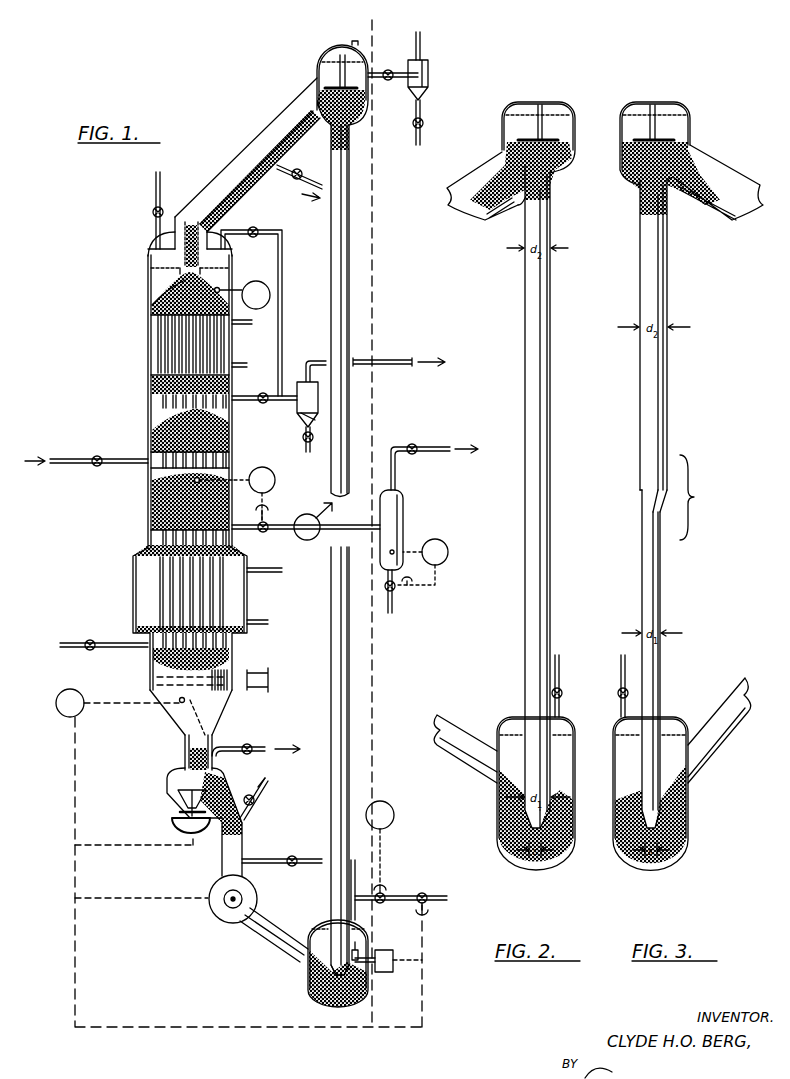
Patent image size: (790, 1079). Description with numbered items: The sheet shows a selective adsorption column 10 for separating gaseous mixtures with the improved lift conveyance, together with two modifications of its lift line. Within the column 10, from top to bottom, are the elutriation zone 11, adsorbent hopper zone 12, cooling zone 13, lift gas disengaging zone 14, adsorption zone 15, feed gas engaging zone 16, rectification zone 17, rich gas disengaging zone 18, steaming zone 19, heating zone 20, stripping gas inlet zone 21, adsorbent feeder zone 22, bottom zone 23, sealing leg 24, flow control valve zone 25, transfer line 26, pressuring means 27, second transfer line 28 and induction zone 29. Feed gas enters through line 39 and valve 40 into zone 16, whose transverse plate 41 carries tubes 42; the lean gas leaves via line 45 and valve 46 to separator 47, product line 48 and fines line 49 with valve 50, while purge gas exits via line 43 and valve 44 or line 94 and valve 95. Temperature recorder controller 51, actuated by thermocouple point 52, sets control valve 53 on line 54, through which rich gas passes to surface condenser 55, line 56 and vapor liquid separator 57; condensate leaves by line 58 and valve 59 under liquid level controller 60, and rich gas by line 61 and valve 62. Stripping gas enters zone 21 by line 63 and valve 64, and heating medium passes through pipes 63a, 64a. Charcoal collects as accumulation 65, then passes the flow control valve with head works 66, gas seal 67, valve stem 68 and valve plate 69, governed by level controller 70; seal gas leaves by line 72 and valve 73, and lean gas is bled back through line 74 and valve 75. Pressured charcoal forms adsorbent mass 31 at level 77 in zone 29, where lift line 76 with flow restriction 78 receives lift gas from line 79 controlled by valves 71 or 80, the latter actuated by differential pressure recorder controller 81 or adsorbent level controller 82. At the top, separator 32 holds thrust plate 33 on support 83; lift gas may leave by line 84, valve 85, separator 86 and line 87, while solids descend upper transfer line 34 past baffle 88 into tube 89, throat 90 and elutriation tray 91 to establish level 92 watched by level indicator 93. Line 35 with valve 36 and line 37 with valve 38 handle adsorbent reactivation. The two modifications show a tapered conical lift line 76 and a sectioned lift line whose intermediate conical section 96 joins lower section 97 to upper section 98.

In FIG. 1, the selective adsorption column 10 is at (177, 492).
In FIG. 1, the elutriation zone 11 is at (235, 250).
In FIG. 1, the adsorbent hopper zone 12 is at (157, 330).
In FIG. 1, the cooling zone 13 is at (196, 352).
In FIG. 1, the lift gas disengaging zone 14 is at (156, 400).
In FIG. 1, the adsorption zone 15 is at (178, 425).
In FIG. 1, the feed gas engaging zone 16 is at (151, 453).
In FIG. 1, the rectification zone 17 is at (170, 505).
In FIG. 1, the rich gas disengaging zone 18 is at (160, 535).
In FIG. 1, the preferential desorption or steaming zone 19 is at (148, 545).
In FIG. 1, the heating zone 20 is at (160, 585).
In FIG. 1, the stripping gas inlet zone 21 is at (152, 658).
In FIG. 1, the adsorbent feeder zone 22 is at (160, 685).
In FIG. 1, the bottom zone 23 is at (230, 700).
In FIG. 1, the sealing leg 24 is at (185, 748).
In FIG. 1, the adsorbent flow control valve zone 25 is at (222, 779).
In FIG. 1, the transfer line 26 is at (245, 831).
In FIG. 1, the pressuring means 27 is at (226, 921).
In FIG. 1, the second transfer line 28 is at (273, 940).
In FIG. 2, the second transfer line 28 is at (460, 728).
In FIG. 3, the second transfer line 28 is at (718, 726).
In FIG. 1, the lift line induction zone 29 is at (337, 967).
In FIG. 2, the lift line induction zone 29 is at (540, 809).
In FIG. 3, the lift line induction zone 29 is at (672, 793).
In FIG. 1, the adsorbent mass 31 is at (366, 985).
In FIG. 2, the adsorbent mass 31 is at (506, 815).
In FIG. 3, the adsorbent mass 31 is at (680, 817).
In FIG. 1, the separator zone 32 is at (316, 86).
In FIG. 2, the separator zone 32 is at (533, 139).
In FIG. 3, the separator zone 32 is at (689, 158).
In FIG. 1, the thrust plate 33 is at (316, 96).
In FIG. 2, the thrust plate 33 is at (530, 150).
In FIG. 1, the upper transfer line 34 is at (250, 156).
In FIG. 2, the upper transfer line 34 is at (470, 206).
In FIG. 3, the upper transfer line 34 is at (716, 206).
In FIG. 1, the line 35 is at (290, 176).
In FIG. 1, the valve 36 is at (298, 169).
In FIG. 1, the line 37 is at (263, 786).
In FIG. 1, the valve 38 is at (256, 801).
In FIG. 1, the line 39 is at (73, 458).
In FIG. 1, the valve 40 is at (96, 466).
In FIG. 1, the transverse plate 41 is at (216, 460).
In FIG. 1, the tubes 42 is at (226, 464).
In FIG. 1, the line 43 is at (253, 227).
In FIG. 1, the valve 44 is at (262, 230).
In FIG. 1, the line 45 is at (250, 392).
In FIG. 1, the valve 46 is at (263, 403).
In FIG. 1, the separator 47 is at (303, 420).
In FIG. 1, the line 48 is at (399, 360).
In FIG. 1, the line 49 is at (316, 426).
In FIG. 1, the valve 50 is at (314, 439).
In FIG. 1, the temperature recorder controller 51 is at (276, 481).
In FIG. 1, the thermocouple point 52 is at (194, 482).
In FIG. 1, the control valve 53 is at (263, 533).
In FIG. 1, the line 54 is at (270, 518).
In FIG. 1, the surface condenser 55 is at (307, 541).
In FIG. 1, the line 56 is at (348, 525).
In FIG. 1, the vapor liquid separator 57 is at (404, 505).
In FIG. 1, the line 58 is at (391, 616).
In FIG. 1, the valve 59 is at (396, 591).
In FIG. 1, the liquid level controller 60 is at (449, 552).
In FIG. 1, the line 61 is at (406, 449).
In FIG. 1, the valve 62 is at (418, 449).
In FIG. 1, the line 63 is at (78, 643).
In FIG. 1, the inlet or outlet pipe 63a is at (266, 573).
In FIG. 1, the valve 64 is at (88, 650).
In FIG. 1, the inlet or outlet pipe 64a is at (269, 622).
In FIG. 1, the accumulation 65 is at (213, 712).
In FIG. 1, the valve head works 66 is at (181, 836).
In FIG. 1, the gas seal 67 is at (180, 812).
In FIG. 1, the valve stem 68 is at (180, 792).
In FIG. 1, the valve plate 69 is at (181, 771).
In FIG. 1, the level controller 70 is at (57, 711).
In FIG. 1, the control valve 71 is at (429, 912).
In FIG. 1, the line 72 is at (222, 746).
In FIG. 1, the valve 73 is at (250, 744).
In FIG. 1, the line 74 is at (291, 866).
In FIG. 1, the valve 75 is at (293, 856).
In FIG. 1, the lift line 76 is at (352, 705).
In FIG. 2, the lift line 76 is at (541, 396).
In FIG. 3, the lift line 76 is at (698, 497).
In FIG. 1, the level 77 is at (338, 925).
In FIG. 1, the flow restriction 78 is at (320, 998).
In FIG. 2, the flow restriction 78 is at (560, 830).
In FIG. 1, the line 79 is at (425, 893).
In FIG. 2, the line 79 is at (580, 668).
In FIG. 3, the line 79 is at (623, 686).
In FIG. 1, the valve 80 is at (383, 893).
In FIG. 2, the valve 80 is at (564, 694).
In FIG. 3, the valve 80 is at (623, 693).
In FIG. 1, the differential pressure recorder controller 81 is at (395, 812).
In FIG. 1, the adsorbent level controller 82 is at (396, 962).
In FIG. 1, the support 83 is at (320, 70).
In FIG. 2, the support 83 is at (531, 100).
In FIG. 3, the support 83 is at (690, 121).
In FIG. 1, the line 84 is at (376, 72).
In FIG. 1, the valve 85 is at (388, 81).
In FIG. 1, the separator 86 is at (426, 85).
In FIG. 1, the line 87 is at (421, 48).
In FIG. 1, the baffle 88 is at (172, 228).
In FIG. 1, the tube 89 is at (183, 258).
In FIG. 1, the throat 90 is at (160, 268).
In FIG. 1, the elutriation tray 91 is at (172, 286).
In FIG. 1, the level 92 is at (168, 310).
In FIG. 1, the level indicator 93 is at (271, 294).
In FIG. 1, the line 94 is at (161, 196).
In FIG. 1, the valve 95 is at (153, 212).
In FIG. 3, the intermediate conical section 96 is at (642, 503).
In FIG. 3, the lower section 97 is at (656, 602).
In FIG. 3, the upper section 98 is at (661, 405).